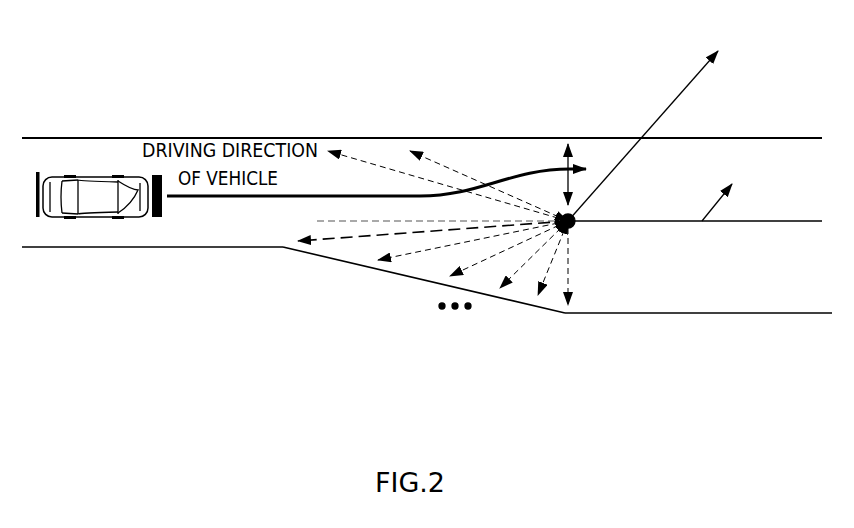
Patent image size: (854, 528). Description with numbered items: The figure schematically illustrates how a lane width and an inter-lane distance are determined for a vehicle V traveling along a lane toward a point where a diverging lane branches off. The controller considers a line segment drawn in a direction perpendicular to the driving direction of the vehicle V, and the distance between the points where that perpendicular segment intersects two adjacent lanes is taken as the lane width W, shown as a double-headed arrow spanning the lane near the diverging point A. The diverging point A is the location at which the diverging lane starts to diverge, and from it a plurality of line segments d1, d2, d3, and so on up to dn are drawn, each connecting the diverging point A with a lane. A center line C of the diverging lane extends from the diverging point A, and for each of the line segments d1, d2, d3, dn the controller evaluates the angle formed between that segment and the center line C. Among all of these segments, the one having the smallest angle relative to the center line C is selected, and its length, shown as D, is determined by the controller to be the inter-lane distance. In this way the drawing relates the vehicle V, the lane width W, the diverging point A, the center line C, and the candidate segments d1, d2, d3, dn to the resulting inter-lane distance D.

The vehicle V is at (99, 195).
The lane width W is at (553, 176).
The diverging point A is at (655, 122).
The center line of the diverging lane C is at (727, 191).
The line segment d1 is at (487, 168).
The line segment d2 is at (443, 168).
The line segment d3 is at (455, 254).
The line segment dn is at (570, 282).
The inter-lane distance D is at (282, 258).